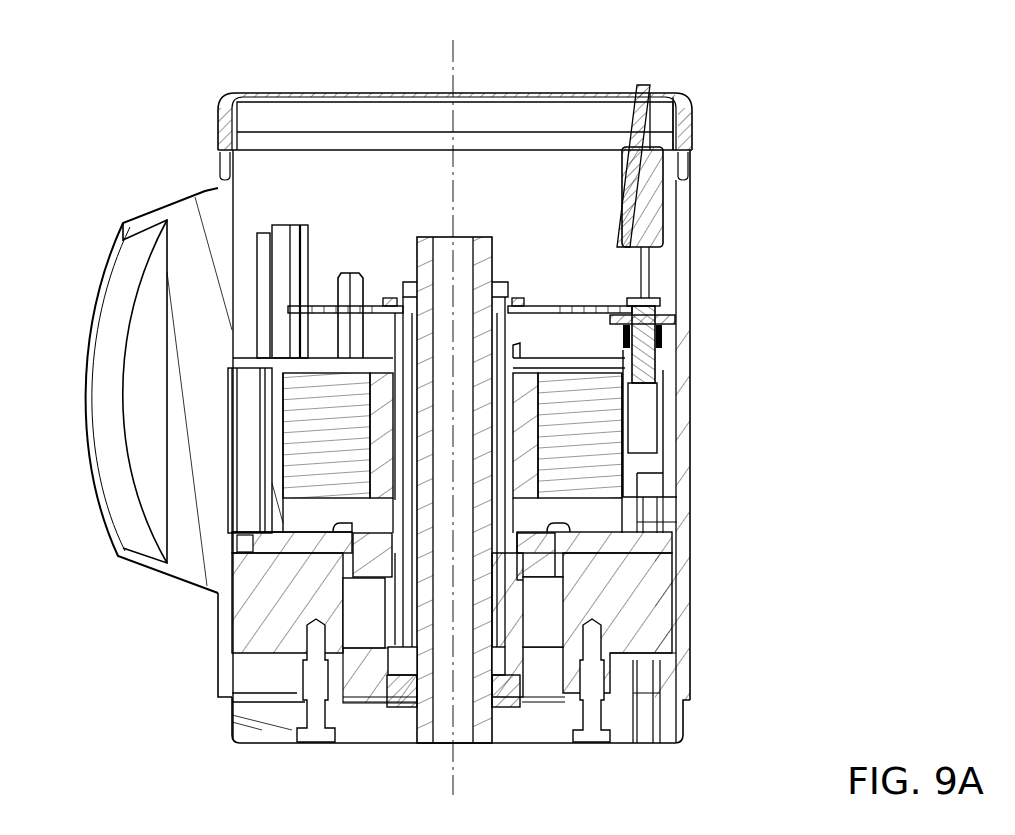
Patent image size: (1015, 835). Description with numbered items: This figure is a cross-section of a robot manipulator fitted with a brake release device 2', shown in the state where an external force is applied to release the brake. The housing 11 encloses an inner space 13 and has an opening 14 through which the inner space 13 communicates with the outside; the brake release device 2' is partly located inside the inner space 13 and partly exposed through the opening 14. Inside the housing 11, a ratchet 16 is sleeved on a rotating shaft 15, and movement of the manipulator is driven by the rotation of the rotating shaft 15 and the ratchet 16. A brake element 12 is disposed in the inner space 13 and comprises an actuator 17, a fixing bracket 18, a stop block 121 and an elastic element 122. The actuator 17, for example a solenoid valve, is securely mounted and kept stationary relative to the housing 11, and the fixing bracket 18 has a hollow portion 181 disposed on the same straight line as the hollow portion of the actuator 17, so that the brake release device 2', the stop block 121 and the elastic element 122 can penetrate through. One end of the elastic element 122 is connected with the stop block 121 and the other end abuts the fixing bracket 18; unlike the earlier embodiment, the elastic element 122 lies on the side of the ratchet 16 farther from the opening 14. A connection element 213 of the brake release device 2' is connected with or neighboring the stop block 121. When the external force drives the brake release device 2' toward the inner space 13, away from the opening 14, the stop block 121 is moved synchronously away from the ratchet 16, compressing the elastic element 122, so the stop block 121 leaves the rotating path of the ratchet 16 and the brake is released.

The housing 11 is at (303, 97).
The inner space 13 is at (262, 182).
The rotating shaft 15 is at (415, 240).
The ratchet 16 is at (535, 305).
The opening 14 is at (640, 100).
The brake release device 2' is at (705, 101).
The actuator 17 is at (647, 188).
The connection element 213 is at (647, 280).
The brake element 12 is at (673, 312).
The elastic element 122 is at (660, 330).
The fixing bracket 18 is at (657, 355).
The stop block 121 is at (648, 375).
The hollow portion 181 is at (648, 422).